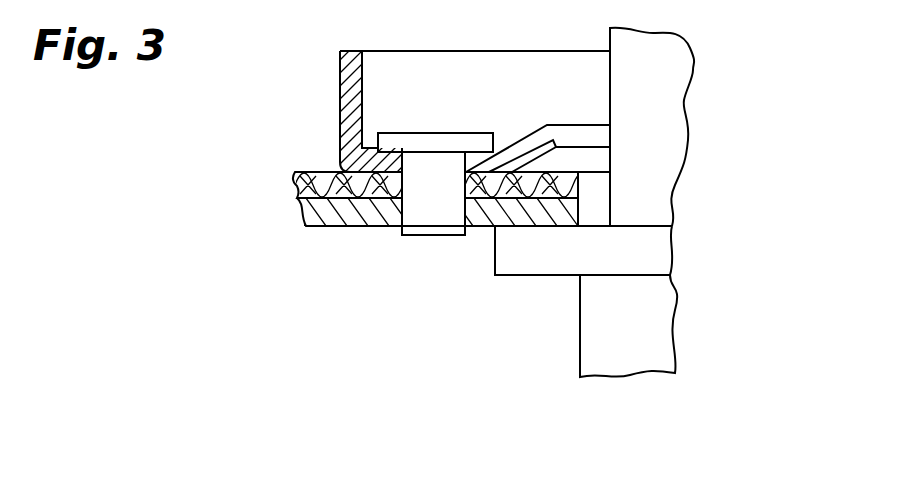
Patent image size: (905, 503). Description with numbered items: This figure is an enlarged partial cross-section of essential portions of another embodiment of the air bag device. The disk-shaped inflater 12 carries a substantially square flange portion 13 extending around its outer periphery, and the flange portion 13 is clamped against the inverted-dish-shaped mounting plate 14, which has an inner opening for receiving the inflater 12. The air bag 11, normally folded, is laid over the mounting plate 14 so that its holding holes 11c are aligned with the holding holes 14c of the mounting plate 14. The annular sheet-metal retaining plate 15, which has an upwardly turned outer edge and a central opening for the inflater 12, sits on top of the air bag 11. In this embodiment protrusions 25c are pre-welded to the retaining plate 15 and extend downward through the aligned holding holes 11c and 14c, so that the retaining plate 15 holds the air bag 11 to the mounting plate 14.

The air bag 11 is at (297, 192).
The holding holes 11c is at (414, 178).
The inflater 12 is at (667, 147).
The flange portion 13 is at (660, 247).
The mounting plate 14 is at (305, 218).
The holding holes 14c is at (413, 214).
The retaining plate 15 is at (346, 110).
The protrusions 25c is at (451, 217).